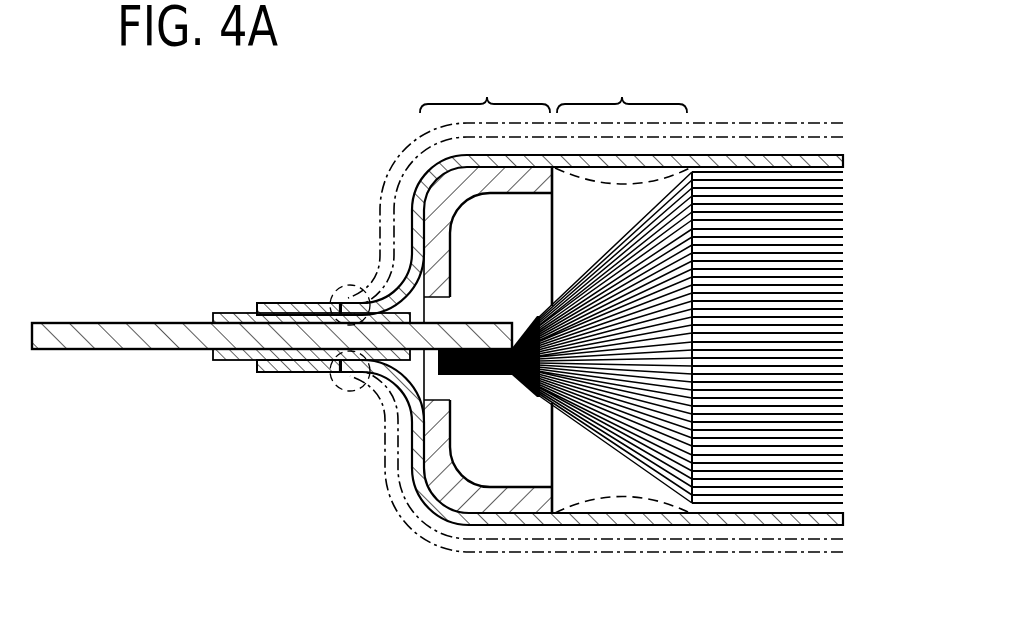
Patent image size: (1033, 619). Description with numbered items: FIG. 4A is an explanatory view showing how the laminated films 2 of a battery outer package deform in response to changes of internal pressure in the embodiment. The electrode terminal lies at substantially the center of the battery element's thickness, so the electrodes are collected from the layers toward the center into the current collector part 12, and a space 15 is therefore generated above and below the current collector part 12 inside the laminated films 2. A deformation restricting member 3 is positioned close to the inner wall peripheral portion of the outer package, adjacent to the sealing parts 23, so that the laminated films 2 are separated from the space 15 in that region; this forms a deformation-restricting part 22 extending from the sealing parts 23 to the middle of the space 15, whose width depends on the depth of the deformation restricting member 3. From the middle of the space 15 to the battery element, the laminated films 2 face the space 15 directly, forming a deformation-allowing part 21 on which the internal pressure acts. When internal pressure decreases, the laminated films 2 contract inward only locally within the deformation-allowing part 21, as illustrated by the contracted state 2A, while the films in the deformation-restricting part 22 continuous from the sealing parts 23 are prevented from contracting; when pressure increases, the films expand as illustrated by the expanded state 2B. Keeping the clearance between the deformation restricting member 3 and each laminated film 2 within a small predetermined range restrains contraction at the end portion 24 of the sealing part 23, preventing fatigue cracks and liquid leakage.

The laminated film 2 is at (760, 516).
The inwardly contracted state of laminated film 2A is at (648, 158).
The expanded state of laminated film 2B is at (782, 127).
The deformation restricting member 3 is at (453, 493).
The current collector part 12 is at (610, 447).
The space 15 is at (593, 210).
The deformation-allowing part 21 is at (622, 89).
The deformation-restricting part 22 is at (485, 89).
The sealing part 23 is at (297, 303).
The end portion of sealing part 24 is at (344, 322).